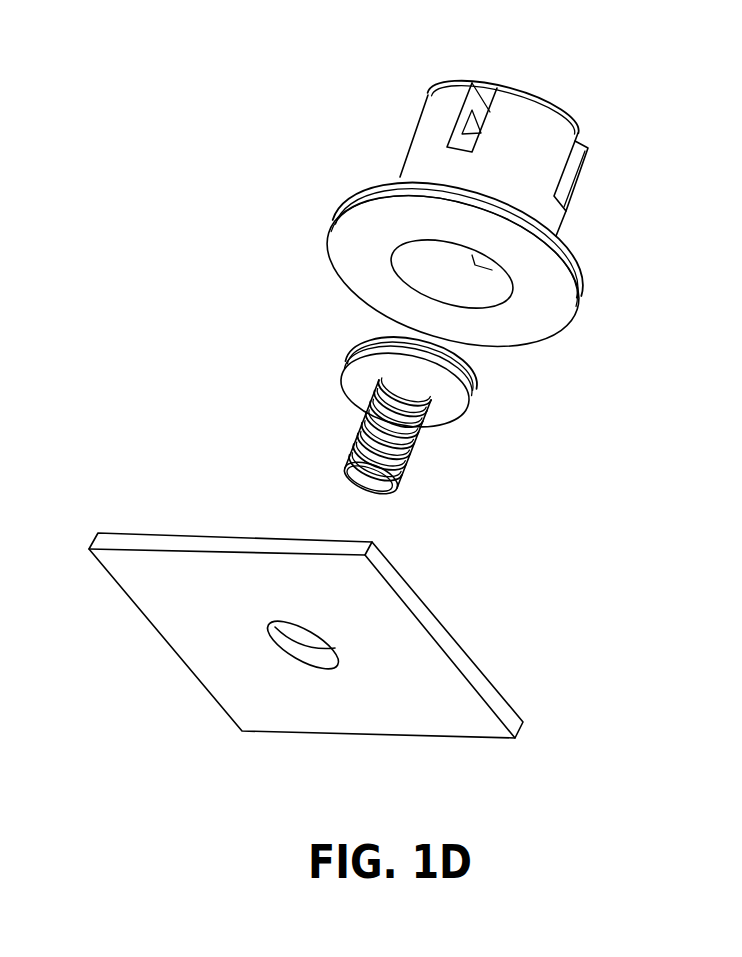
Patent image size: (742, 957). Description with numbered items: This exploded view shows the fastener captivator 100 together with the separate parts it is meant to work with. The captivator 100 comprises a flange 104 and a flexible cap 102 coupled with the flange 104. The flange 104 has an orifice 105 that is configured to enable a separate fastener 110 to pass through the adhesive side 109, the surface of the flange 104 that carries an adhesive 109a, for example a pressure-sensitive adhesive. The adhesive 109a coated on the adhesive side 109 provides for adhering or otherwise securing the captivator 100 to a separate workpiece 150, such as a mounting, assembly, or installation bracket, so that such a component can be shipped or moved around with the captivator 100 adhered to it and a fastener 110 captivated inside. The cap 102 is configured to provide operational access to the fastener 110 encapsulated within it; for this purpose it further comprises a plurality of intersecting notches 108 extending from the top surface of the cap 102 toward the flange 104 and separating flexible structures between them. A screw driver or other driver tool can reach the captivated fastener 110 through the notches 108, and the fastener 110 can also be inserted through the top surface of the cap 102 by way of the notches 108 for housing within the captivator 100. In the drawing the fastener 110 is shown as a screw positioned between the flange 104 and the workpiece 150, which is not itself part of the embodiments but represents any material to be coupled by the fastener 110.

The fastener captivator 100 is at (467, 239).
The flexible cap 102 is at (442, 139).
The flange 104 is at (456, 296).
The orifice 105 is at (475, 305).
The notch 108 is at (488, 72).
The adhesive side 109 is at (549, 330).
The adhesive 109a is at (542, 286).
The fastener 110 is at (403, 445).
The workpiece 150 is at (432, 672).